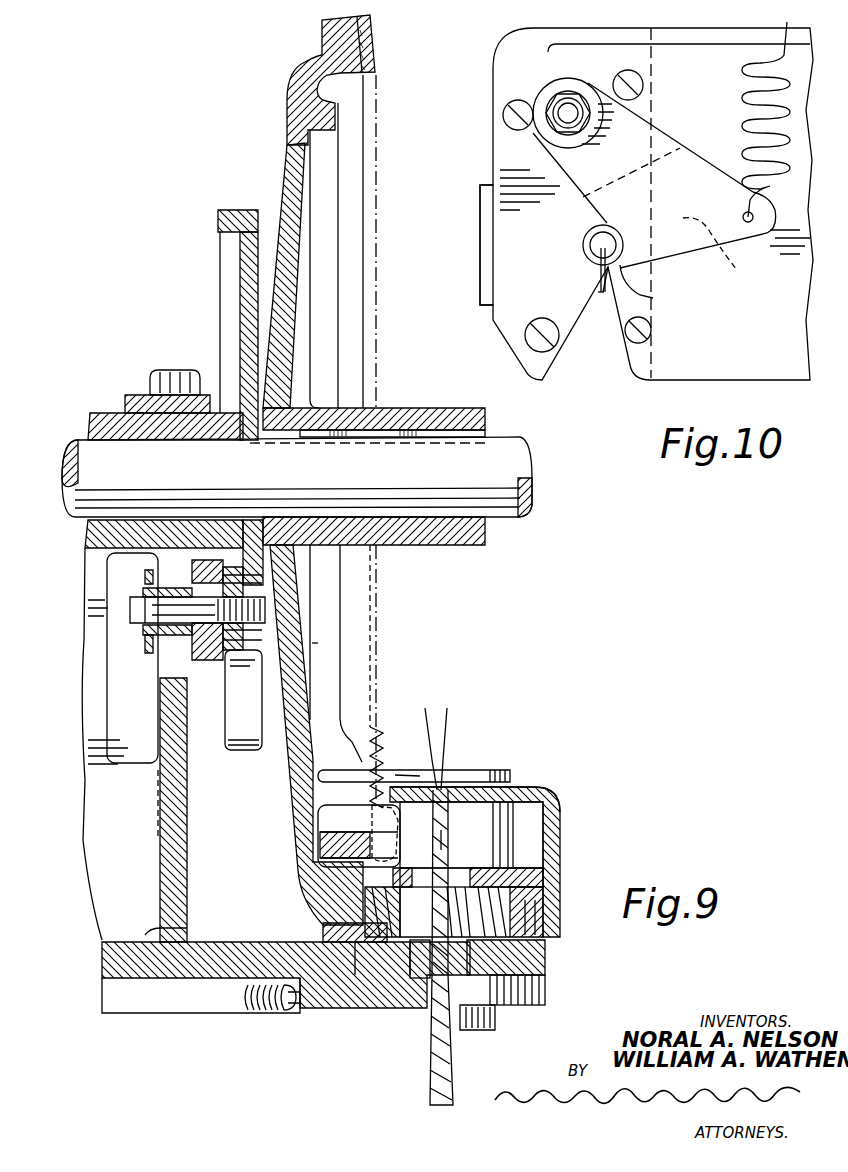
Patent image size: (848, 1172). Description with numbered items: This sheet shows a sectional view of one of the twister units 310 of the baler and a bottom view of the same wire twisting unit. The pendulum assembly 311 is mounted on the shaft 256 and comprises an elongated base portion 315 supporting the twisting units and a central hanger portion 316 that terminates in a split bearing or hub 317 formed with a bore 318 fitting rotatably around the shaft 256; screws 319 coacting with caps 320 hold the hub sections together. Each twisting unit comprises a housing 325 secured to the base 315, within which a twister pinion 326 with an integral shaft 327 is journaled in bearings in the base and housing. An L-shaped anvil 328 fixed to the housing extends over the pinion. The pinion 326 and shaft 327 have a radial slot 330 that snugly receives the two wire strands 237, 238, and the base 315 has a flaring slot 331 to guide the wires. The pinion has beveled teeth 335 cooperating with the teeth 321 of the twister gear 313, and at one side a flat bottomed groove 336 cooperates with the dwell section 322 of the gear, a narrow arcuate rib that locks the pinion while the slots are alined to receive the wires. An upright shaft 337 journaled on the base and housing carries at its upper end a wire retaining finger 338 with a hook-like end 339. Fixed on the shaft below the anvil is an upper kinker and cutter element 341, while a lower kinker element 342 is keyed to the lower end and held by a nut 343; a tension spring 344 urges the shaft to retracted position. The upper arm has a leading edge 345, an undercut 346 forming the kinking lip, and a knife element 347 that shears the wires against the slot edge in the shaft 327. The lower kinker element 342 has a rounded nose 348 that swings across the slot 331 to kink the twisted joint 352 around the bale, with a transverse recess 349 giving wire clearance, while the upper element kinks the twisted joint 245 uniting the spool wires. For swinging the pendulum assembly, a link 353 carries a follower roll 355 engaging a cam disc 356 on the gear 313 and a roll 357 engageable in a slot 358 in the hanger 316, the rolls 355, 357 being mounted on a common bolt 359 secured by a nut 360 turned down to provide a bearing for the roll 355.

In FIG. 9, the twister units 310 is at (543, 782).
In FIG. 9, the pendulum assembly 311 is at (90, 910).
In FIG. 9, the twister gear 313 is at (275, 795).
In FIG. 9, the base portion 315 is at (125, 970).
In FIG. 10, the base portion 315 is at (548, 362).
In FIG. 9, the hanger portion 316 is at (165, 832).
In FIG. 9, the split bearing or hub 317 is at (92, 413).
In FIG. 9, the bore 318 is at (92, 525).
In FIG. 9, the screws 319 is at (175, 370).
In FIG. 9, the caps 320 is at (128, 395).
In FIG. 9, the teeth of the twister gear 321 is at (372, 30).
In FIG. 9, the dwell section 322 is at (310, 923).
In FIG. 9, the housing 325 is at (540, 924).
In FIG. 9, the twister pinion 326 is at (500, 910).
In FIG. 10, the twister pinion 326 is at (608, 230).
In FIG. 9, the shaft of the pinion 327 is at (545, 866).
In FIG. 9, the anvil 328 is at (562, 800).
In FIG. 10, the anvil 328 is at (487, 305).
In FIG. 9, the radial slot 330 is at (540, 945).
In FIG. 10, the radial slot 330 is at (600, 280).
In FIG. 10, the slot in the pendulum base 331 is at (600, 293).
In FIG. 9, the teeth of the pinion 335 is at (526, 985).
In FIG. 9, the flat bottomed groove 336 is at (375, 955).
In FIG. 10, the upright shaft 337 is at (565, 113).
In FIG. 9, the wire retaining finger 338 is at (465, 768).
In FIG. 9, the hook-like end 339 is at (412, 776).
In FIG. 9, the upper kinker and cutter element 341 is at (500, 840).
In FIG. 9, the lower kinker element 342 is at (405, 990).
In FIG. 10, the lower kinker element 342 is at (672, 142).
In FIG. 9, the nut 343 is at (476, 1030).
In FIG. 10, the nut 343 is at (575, 98).
In FIG. 9, the tension spring 344 is at (252, 1012).
In FIG. 10, the tension spring 344 is at (752, 85).
In FIG. 9, the leading edge 345 is at (396, 838).
In FIG. 9, the undercut 346 is at (382, 855).
In FIG. 9, the knife element 347 is at (345, 858).
In FIG. 10, the rounded nose 348 is at (653, 298).
In FIG. 10, the transverse recess 349 is at (722, 270).
In FIG. 9, the twisted joint 352 is at (438, 1055).
In FIG. 9, the link 353 is at (208, 662).
In FIG. 9, the follower roll 355 is at (300, 646).
In FIG. 9, the cam disc 356 is at (233, 215).
In FIG. 9, the roll 357 is at (158, 640).
In FIG. 9, the slot 358 is at (160, 680).
In FIG. 9, the common bolt 359 is at (132, 603).
In FIG. 9, the nut 360 is at (300, 588).
In FIG. 9, the wire strand 237 is at (447, 708).
In FIG. 10, the wire strand 237 is at (600, 247).
In FIG. 9, the wire strand 238 is at (425, 708).
In FIG. 10, the wire strand 238 is at (603, 258).
In FIG. 9, the twisted joint 245 is at (455, 836).
In FIG. 9, the shaft 256 is at (95, 458).